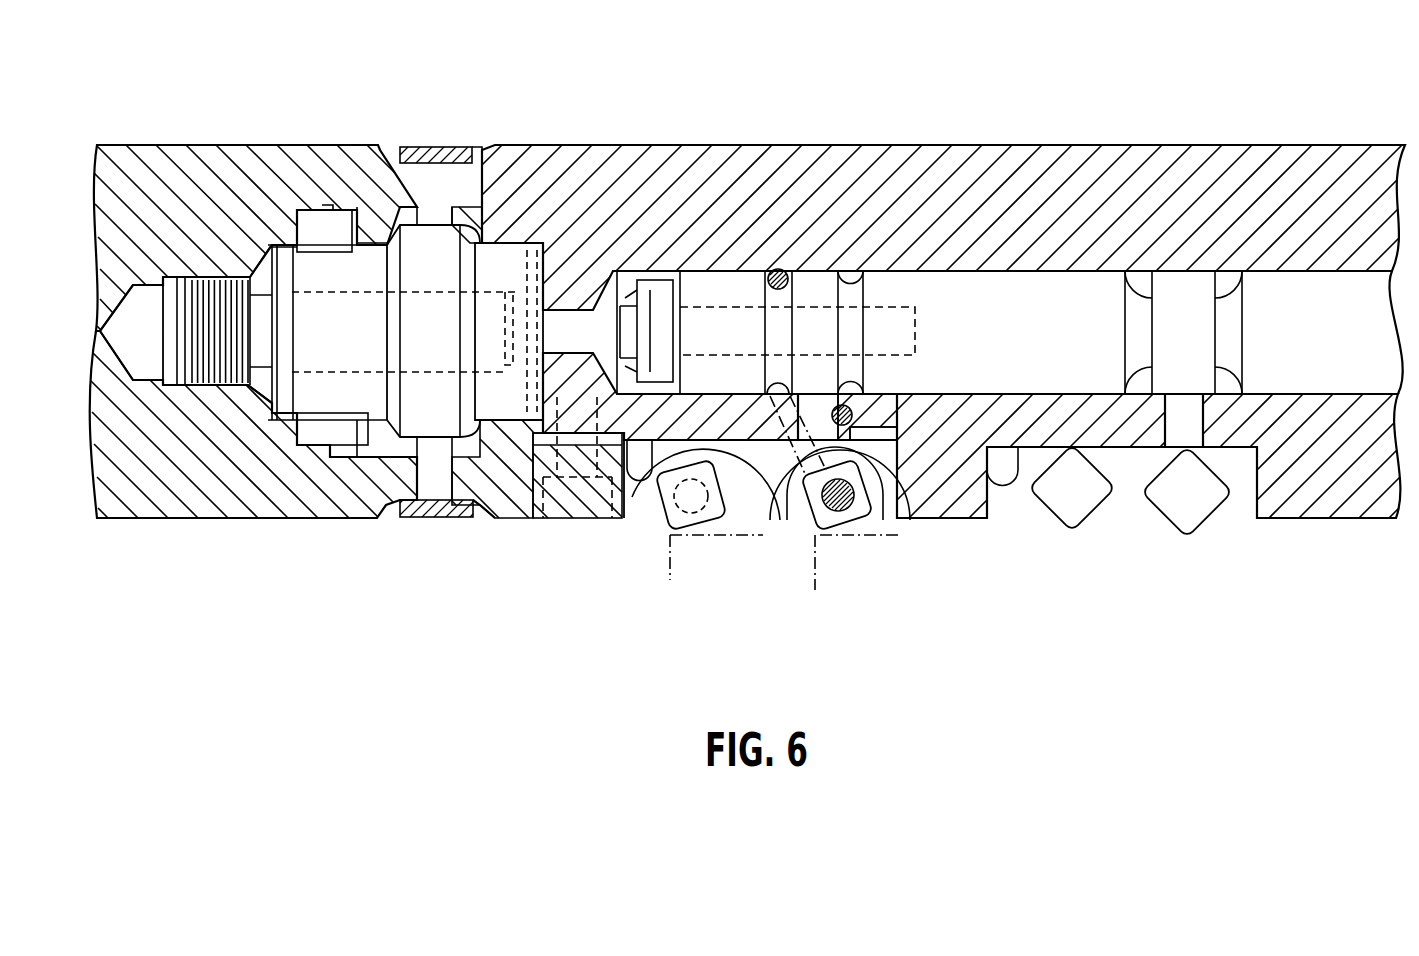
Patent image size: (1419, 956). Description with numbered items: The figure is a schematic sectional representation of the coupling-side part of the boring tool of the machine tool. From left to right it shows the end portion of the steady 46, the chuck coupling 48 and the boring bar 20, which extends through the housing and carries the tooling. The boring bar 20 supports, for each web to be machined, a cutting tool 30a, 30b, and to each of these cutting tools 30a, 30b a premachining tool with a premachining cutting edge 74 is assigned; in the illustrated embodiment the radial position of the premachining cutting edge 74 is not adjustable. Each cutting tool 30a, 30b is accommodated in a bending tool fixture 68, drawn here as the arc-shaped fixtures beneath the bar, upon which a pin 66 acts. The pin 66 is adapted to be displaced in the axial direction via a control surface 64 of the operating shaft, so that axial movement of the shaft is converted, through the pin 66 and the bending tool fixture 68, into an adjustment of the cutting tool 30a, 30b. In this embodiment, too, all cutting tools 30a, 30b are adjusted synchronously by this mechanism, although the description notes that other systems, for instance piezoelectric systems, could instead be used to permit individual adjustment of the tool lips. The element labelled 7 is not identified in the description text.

The steady 46 is at (192, 176).
The chuck coupling 48 is at (434, 245).
The boring bar 20 is at (847, 176).
The control surface 64 is at (1252, 292).
The premachining cutting edge 74 is at (682, 535).
The bending tool fixture 68 is at (763, 460).
The cutting tool 30a is at (825, 533).
The seal ring 7 is at (1070, 500).
The cutting tool 30b is at (1188, 527).
The pin 66 is at (1192, 427).